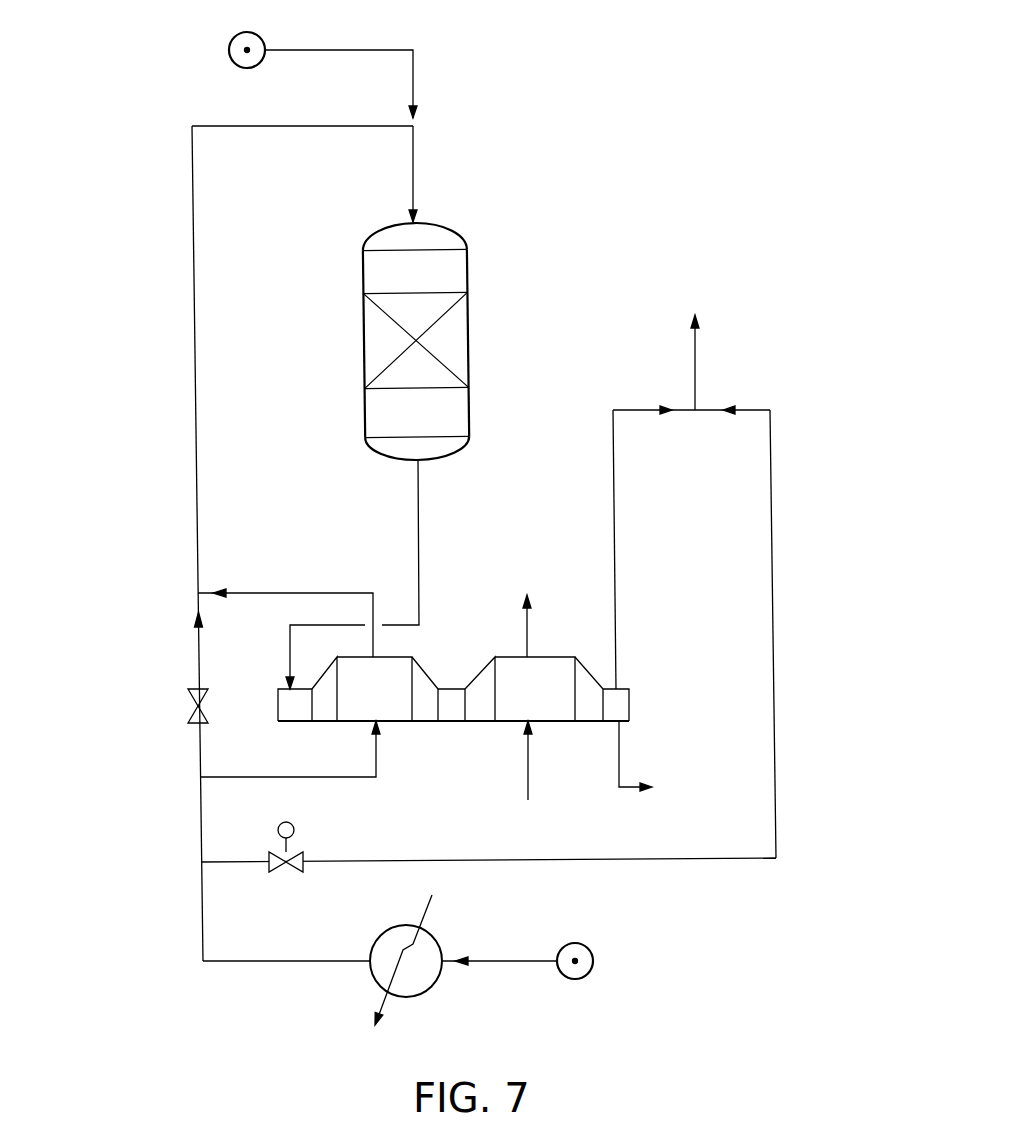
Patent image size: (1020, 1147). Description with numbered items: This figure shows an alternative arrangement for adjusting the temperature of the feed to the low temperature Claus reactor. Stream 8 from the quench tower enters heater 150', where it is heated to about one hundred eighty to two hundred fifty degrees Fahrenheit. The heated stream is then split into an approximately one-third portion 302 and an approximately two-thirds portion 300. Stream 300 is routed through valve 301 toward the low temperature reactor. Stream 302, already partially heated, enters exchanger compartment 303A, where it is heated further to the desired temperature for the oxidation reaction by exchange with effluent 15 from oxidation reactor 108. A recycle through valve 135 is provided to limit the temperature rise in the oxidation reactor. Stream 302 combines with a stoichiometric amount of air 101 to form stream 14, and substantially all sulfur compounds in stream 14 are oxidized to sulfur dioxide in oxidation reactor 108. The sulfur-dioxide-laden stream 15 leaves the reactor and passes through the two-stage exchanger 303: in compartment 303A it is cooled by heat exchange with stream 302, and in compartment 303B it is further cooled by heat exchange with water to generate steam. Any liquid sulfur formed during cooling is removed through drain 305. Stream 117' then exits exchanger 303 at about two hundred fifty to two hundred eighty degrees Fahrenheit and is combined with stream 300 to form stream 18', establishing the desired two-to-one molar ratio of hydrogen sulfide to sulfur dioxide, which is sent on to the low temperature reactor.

The air 101 is at (307, 50).
The stream 14 is at (413, 157).
The portion 302 is at (194, 368).
The oxidation reactor 108 is at (468, 335).
The effluent 15 is at (419, 522).
The two-stage exchanger 303 is at (453, 693).
The exchanger compartment 303A is at (392, 656).
The compartment 303B is at (530, 656).
The valve 135 is at (190, 714).
The stream 117' is at (653, 549).
The stream 18' is at (693, 336).
The drain 305 is at (627, 795).
The portion 300 is at (218, 863).
The valve 301 is at (299, 852).
The heater 150' is at (350, 975).
The stream 8 is at (492, 960).